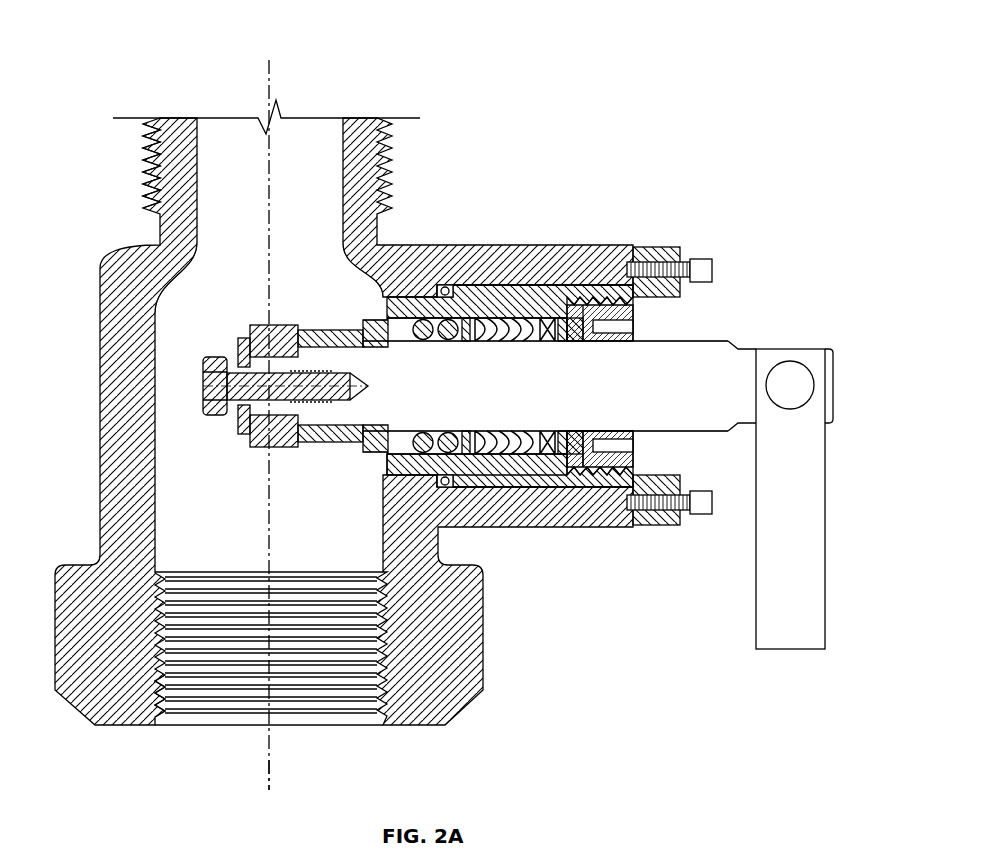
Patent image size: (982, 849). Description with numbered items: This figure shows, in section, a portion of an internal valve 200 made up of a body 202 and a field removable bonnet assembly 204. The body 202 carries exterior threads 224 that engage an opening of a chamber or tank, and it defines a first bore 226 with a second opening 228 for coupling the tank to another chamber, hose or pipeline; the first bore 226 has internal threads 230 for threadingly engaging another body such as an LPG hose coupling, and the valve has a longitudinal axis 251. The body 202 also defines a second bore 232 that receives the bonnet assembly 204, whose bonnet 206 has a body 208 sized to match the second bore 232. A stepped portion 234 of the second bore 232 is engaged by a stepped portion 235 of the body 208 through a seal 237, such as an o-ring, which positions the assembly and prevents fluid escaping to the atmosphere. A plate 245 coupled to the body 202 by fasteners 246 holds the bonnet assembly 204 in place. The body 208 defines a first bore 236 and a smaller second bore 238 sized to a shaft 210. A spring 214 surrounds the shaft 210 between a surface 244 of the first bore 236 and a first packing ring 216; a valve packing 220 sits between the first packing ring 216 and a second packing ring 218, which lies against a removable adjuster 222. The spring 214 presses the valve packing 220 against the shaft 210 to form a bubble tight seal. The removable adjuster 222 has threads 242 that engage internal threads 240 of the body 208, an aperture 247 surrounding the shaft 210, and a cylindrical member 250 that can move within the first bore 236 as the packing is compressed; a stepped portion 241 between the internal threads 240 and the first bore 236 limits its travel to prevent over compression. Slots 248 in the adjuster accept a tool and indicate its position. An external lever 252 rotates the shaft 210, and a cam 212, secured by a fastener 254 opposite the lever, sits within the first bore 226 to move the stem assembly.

The internal valve 200 is at (150, 40).
The body 202 is at (108, 350).
The field removable bonnet assembly 204 is at (348, 312).
The bonnet 206 is at (582, 310).
The body 208 is at (512, 297).
The shaft 210 is at (742, 420).
The cam 212 is at (265, 432).
The spring 214 is at (418, 432).
The first packing ring 216 is at (482, 485).
The second packing ring 218 is at (572, 440).
The valve packing 220 is at (522, 430).
The removable adjuster 222 is at (605, 470).
The exterior threads 224 is at (143, 183).
The first bore 226 is at (180, 515).
The second opening 228 is at (380, 715).
The internal threads 230 is at (160, 690).
The second bore 232 is at (553, 287).
The stepped portion 234 is at (445, 290).
The stepped portion 235 is at (470, 290).
The first bore 236 is at (505, 482).
The seal 237 is at (448, 488).
The second bore 238 is at (333, 440).
The internal threads 240 is at (610, 302).
The stepped portion 241 is at (583, 341).
The threads 242 is at (633, 305).
The surface 244 is at (398, 340).
The plate 245 is at (680, 250).
The fasteners 246 is at (712, 270).
The aperture 247 is at (620, 437).
The slots 248 is at (625, 327).
The cylindrical member 250 is at (562, 467).
The longitudinal axis 251 is at (272, 762).
The external lever 252 is at (797, 635).
The fastener 254 is at (232, 360).